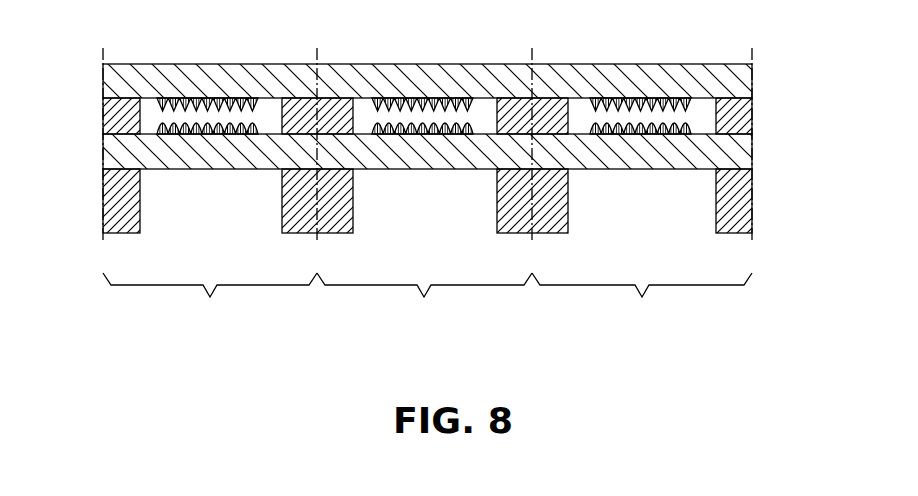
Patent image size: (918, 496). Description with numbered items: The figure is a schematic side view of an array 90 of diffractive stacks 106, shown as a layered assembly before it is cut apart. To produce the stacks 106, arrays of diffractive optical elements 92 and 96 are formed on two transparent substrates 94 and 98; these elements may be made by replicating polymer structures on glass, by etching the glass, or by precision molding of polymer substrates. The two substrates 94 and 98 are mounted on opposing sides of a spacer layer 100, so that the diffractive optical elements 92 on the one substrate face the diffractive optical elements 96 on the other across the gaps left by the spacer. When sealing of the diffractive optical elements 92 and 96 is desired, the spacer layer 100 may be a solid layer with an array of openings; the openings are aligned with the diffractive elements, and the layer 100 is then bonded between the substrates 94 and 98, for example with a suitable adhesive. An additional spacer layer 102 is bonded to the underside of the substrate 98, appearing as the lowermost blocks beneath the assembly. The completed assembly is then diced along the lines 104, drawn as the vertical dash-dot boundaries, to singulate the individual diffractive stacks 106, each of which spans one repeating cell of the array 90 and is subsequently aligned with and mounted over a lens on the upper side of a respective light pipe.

The array 90 is at (454, 172).
The diffractive optical elements 92 is at (604, 133).
The transparent substrate 94 is at (671, 162).
The diffractive optical elements 96 is at (601, 100).
The transparent substrate 98 is at (672, 73).
The spacer layer 100 is at (498, 112).
The additional spacer layer 102 is at (503, 208).
The lines 104 is at (101, 240).
The diffractive stacks 106 is at (427, 300).